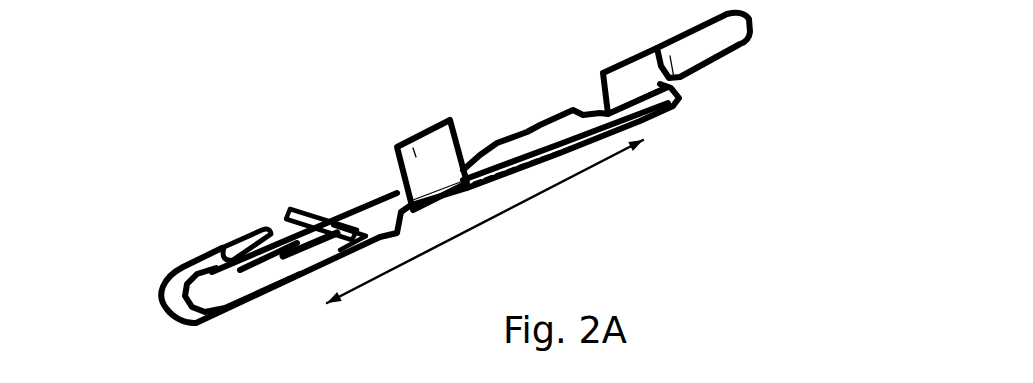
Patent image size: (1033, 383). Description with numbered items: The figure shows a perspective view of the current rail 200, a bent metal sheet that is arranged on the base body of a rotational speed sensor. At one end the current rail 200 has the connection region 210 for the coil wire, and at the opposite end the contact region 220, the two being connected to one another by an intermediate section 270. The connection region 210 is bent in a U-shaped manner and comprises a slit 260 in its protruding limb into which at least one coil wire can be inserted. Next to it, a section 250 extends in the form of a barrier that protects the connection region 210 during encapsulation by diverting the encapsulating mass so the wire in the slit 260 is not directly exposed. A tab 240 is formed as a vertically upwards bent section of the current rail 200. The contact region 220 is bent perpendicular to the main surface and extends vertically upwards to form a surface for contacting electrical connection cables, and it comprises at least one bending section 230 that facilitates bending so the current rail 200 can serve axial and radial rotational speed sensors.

The current rail 200 is at (188, 66).
The connection region 210 is at (166, 240).
The contact region 220 is at (708, 92).
The bending section 230 is at (652, 51).
The tab 240 is at (405, 147).
The section (barrier) 250 is at (318, 211).
The slit 260 is at (226, 245).
The intermediate section 270 is at (577, 174).